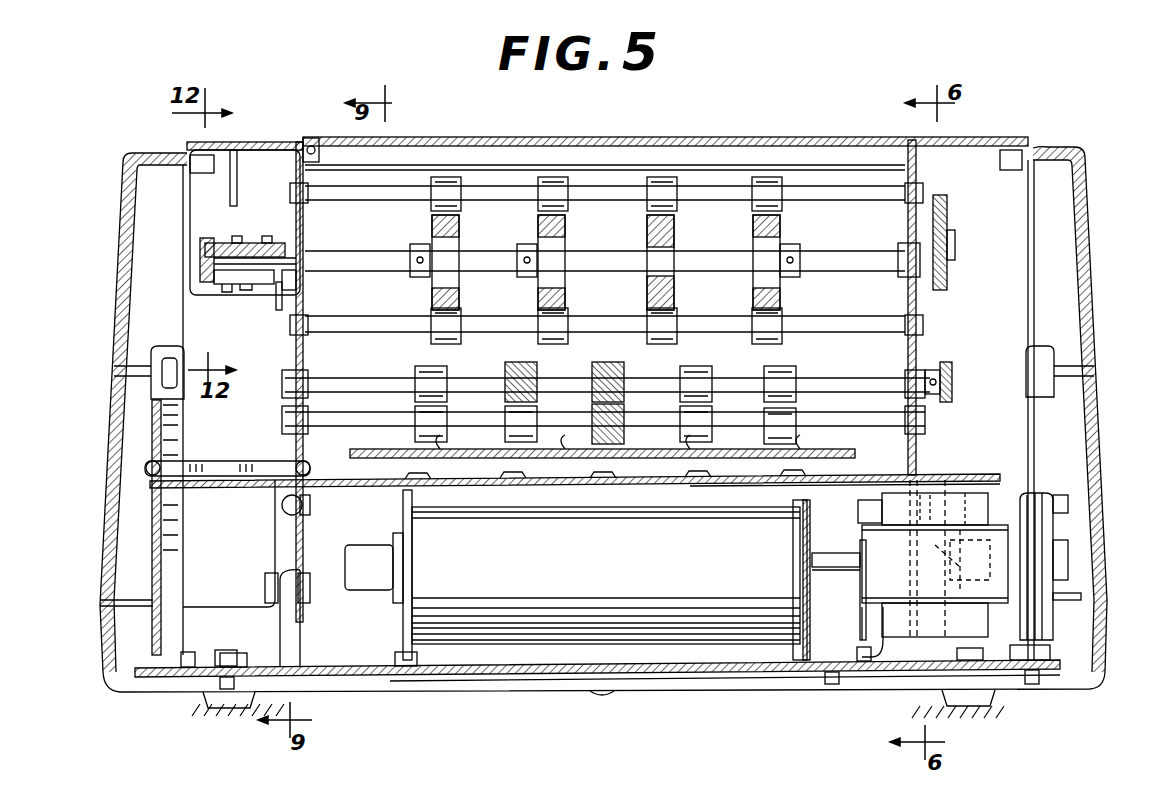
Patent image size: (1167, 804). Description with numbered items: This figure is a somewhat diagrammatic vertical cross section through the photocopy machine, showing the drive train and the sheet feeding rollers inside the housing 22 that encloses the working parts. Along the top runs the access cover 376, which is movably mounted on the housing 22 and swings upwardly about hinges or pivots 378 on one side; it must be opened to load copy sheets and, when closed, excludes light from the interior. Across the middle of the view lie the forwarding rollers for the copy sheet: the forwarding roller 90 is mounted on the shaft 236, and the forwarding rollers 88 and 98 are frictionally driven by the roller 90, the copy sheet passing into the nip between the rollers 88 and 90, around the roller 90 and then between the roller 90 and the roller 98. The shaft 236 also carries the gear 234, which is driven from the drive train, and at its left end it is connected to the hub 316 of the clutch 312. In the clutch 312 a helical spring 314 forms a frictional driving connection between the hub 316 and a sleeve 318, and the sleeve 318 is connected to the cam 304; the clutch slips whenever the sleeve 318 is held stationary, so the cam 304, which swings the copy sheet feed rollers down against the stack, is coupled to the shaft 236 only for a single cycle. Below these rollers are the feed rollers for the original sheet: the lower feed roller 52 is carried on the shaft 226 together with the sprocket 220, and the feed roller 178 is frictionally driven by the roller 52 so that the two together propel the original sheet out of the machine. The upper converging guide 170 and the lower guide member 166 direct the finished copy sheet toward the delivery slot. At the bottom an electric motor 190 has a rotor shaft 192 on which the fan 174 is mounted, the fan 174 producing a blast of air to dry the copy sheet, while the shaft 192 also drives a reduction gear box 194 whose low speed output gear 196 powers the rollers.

The housing 22 is at (276, 142).
The hinges or pivots 378 is at (309, 138).
The access cover 376 is at (575, 138).
The clutch 312 is at (205, 222).
The forwarding roller 88 is at (647, 184).
The shaft 236 is at (380, 252).
The forwarding roller 90 is at (647, 290).
The forwarding roller 98 is at (647, 338).
The gear 234 is at (945, 218).
The sleeve 318 is at (246, 243).
The hub 316 is at (200, 277).
The helical spring 314 is at (236, 286).
The cam 304 is at (278, 304).
The shaft 226 is at (824, 378).
The lower feed roller 52 is at (766, 366).
The forwarding or feed roller 178 is at (592, 405).
The sprocket 220 is at (950, 364).
The upper converging guide 170 is at (362, 455).
The lower guide member 166 is at (500, 470).
The fan 174 is at (578, 580).
The rotor shaft 192 is at (828, 553).
The low speed output gear 196 is at (962, 510).
The electric motor 190 is at (880, 590).
The reduction gear box 194 is at (1018, 493).